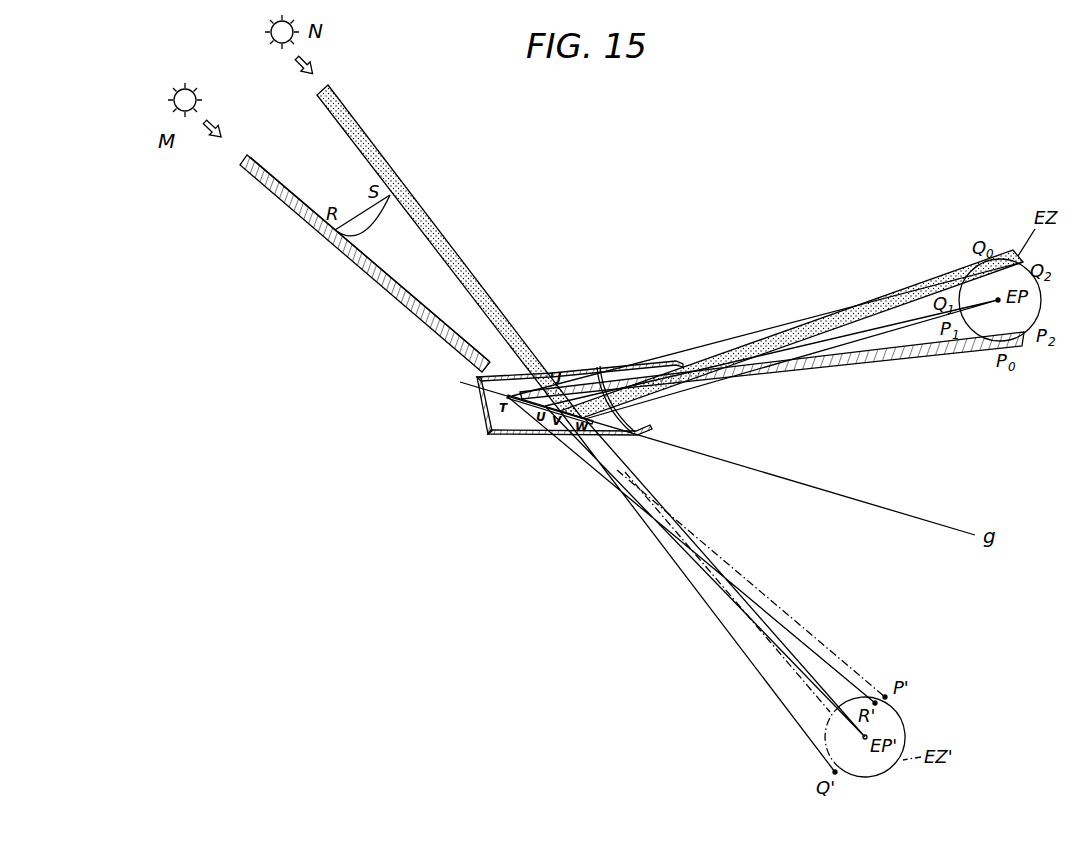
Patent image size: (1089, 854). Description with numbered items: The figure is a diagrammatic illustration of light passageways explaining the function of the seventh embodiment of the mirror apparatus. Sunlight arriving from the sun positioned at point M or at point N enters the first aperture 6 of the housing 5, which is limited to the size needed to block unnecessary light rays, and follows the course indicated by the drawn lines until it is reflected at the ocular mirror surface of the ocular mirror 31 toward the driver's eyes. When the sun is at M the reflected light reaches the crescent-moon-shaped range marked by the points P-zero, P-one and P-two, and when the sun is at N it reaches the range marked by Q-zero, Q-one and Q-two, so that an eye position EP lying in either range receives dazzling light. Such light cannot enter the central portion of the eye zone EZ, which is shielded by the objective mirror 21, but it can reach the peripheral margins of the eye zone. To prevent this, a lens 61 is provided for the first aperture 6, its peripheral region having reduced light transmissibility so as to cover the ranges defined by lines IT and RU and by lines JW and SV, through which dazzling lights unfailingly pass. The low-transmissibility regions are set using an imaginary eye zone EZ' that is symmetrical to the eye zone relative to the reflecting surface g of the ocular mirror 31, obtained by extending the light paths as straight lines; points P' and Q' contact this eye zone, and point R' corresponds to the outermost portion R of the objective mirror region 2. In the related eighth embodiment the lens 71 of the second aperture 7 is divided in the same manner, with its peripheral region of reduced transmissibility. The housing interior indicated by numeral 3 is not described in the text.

The objective mirror region 2 is at (363, 196).
The objective mirror 21 is at (374, 233).
The housing 3 is at (540, 440).
The ocular mirror 31 is at (522, 406).
The housing 5 is at (586, 366).
The first aperture 6 is at (520, 370).
The lens 61 is at (518, 372).
The second aperture 7 is at (657, 403).
The lens 71 is at (623, 418).